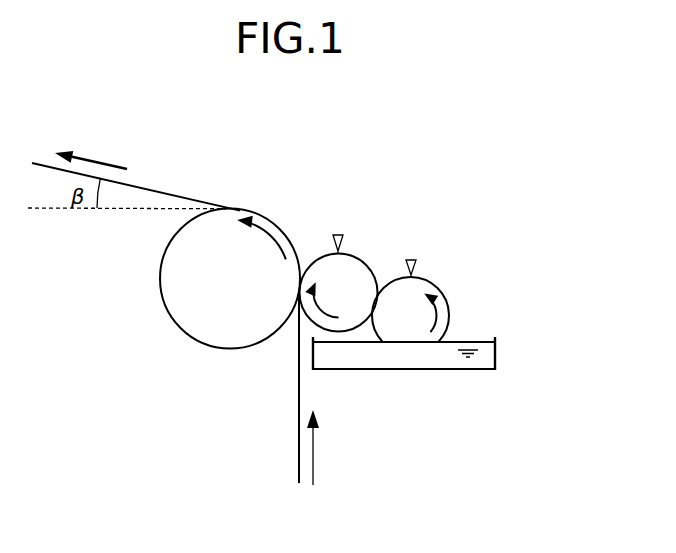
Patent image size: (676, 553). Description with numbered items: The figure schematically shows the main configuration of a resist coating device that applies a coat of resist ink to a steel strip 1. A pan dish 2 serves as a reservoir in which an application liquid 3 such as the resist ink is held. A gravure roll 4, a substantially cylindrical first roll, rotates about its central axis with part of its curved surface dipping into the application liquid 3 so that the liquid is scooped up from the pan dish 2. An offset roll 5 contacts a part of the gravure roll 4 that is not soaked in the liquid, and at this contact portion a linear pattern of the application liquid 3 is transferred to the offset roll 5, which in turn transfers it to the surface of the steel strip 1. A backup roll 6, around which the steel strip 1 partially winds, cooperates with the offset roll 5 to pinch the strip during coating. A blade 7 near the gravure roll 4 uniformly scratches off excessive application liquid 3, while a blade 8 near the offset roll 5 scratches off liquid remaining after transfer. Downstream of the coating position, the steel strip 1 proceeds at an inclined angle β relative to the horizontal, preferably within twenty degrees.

The steel strip 1 is at (143, 188).
The pan dish 2 is at (428, 371).
The application liquid 3 is at (490, 354).
The gravure roll 4 is at (399, 291).
The offset roll 5 is at (330, 267).
The backup roll 6 is at (212, 318).
The blade 7 is at (411, 259).
The blade 8 is at (339, 233).